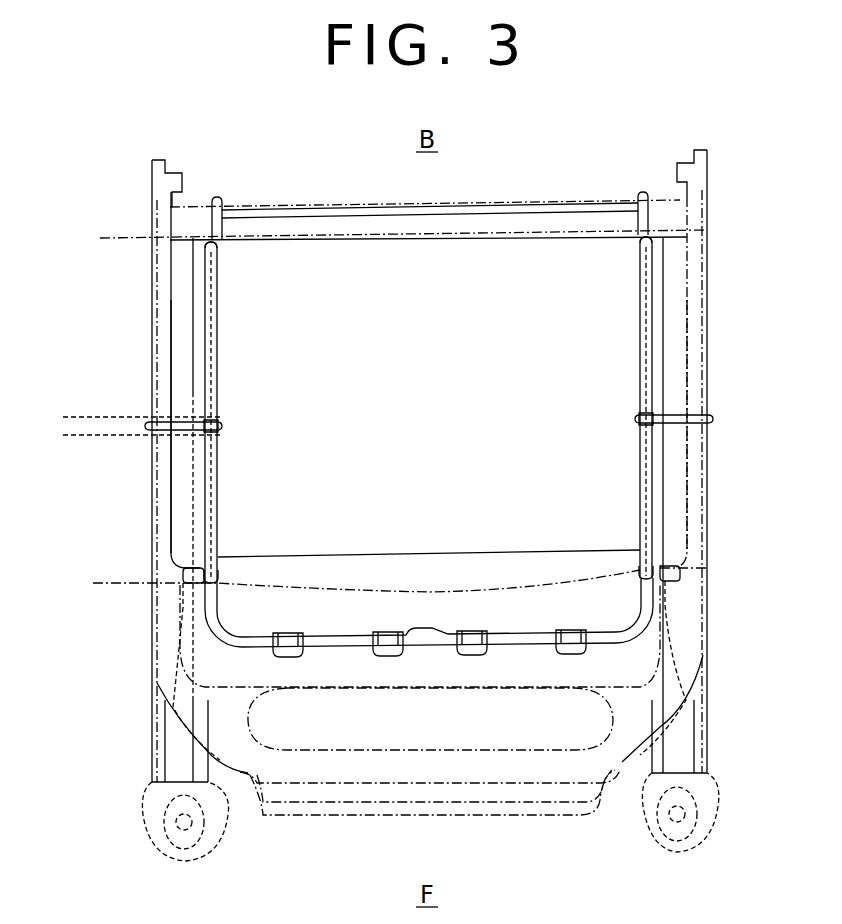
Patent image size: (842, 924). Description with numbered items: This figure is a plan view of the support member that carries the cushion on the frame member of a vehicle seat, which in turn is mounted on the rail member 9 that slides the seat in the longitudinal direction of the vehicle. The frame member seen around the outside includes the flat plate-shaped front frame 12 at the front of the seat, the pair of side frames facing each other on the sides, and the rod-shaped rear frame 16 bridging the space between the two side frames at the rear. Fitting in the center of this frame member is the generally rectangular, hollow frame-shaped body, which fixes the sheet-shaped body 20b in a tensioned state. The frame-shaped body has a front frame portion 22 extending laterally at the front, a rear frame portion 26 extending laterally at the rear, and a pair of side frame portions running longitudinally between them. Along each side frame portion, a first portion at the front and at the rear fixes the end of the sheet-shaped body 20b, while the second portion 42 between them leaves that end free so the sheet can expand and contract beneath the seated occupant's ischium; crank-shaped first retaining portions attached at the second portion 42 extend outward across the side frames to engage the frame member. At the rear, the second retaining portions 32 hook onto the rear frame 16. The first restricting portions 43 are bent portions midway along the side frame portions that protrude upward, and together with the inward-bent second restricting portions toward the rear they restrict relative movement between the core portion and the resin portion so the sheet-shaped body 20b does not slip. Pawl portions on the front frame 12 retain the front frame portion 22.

The rail member 9 is at (687, 733).
The front frame 12 is at (327, 810).
The rear frame 16 is at (663, 212).
The sheet-shaped body 20b is at (404, 393).
The front frame portion 22 is at (508, 640).
The rear frame portion 26 is at (538, 210).
The second retaining portions 32 is at (222, 202).
The second portion 42 is at (75, 392).
The first restricting portions 43 is at (222, 513).